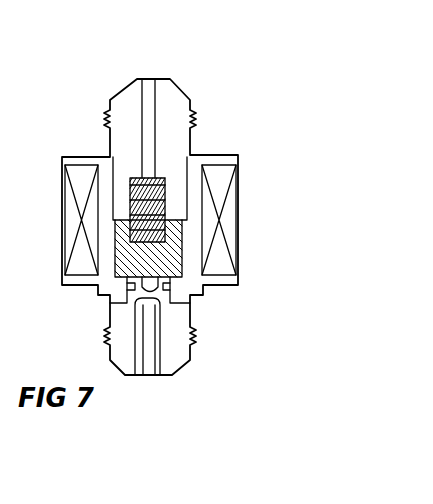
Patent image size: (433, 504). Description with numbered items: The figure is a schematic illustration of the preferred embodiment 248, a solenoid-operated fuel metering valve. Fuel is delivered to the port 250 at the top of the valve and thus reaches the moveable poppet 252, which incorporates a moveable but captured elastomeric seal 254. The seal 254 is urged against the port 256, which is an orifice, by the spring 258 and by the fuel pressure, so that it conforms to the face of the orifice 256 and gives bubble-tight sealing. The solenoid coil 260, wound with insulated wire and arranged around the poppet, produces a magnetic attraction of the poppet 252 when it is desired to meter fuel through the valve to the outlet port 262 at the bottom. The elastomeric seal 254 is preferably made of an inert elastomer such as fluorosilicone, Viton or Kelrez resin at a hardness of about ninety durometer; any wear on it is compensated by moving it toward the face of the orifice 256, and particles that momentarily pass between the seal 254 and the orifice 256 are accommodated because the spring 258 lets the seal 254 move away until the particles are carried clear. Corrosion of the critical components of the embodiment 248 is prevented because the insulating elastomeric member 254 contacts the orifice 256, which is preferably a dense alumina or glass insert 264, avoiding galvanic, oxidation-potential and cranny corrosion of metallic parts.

The preferred embodiment 248 is at (217, 80).
The port 250 is at (149, 78).
The moveable poppet 252 is at (169, 243).
The elastomeric seal 254 is at (156, 268).
The port 256 is at (128, 284).
The spring 258 is at (166, 192).
The solenoid coil 260 is at (83, 190).
The port 262 is at (147, 375).
The glass insert 264 is at (188, 301).